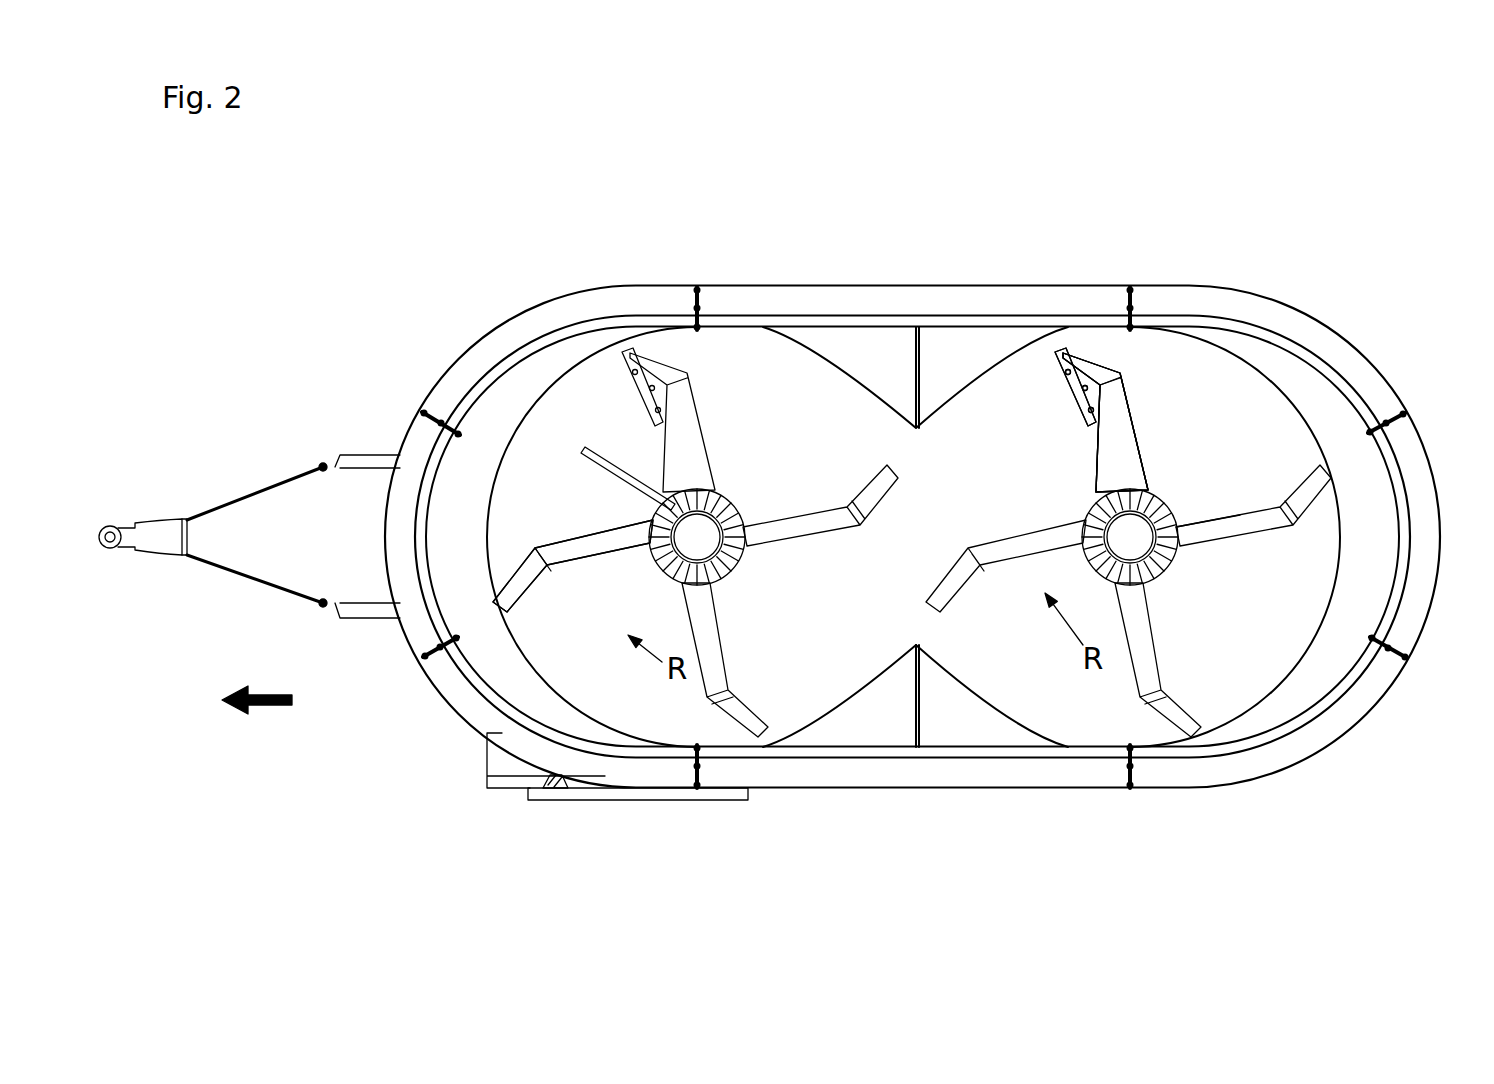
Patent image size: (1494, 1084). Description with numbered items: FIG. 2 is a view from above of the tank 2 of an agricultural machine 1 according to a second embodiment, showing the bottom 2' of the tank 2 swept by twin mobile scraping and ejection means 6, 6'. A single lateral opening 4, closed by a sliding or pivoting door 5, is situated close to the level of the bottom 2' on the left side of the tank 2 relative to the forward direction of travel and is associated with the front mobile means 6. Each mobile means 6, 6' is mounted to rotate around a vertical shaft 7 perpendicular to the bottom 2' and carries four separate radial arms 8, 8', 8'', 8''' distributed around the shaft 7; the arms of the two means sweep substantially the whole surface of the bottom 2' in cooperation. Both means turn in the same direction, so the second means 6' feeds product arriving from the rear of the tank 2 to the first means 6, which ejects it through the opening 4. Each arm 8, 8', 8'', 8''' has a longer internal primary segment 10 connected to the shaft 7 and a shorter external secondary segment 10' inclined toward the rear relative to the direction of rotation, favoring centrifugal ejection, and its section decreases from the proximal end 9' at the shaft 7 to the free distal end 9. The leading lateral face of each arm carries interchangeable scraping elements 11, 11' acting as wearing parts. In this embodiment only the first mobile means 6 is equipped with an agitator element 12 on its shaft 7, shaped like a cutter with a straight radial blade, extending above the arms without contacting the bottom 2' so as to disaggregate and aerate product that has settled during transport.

The agricultural machine 1 is at (697, 862).
The tank 2 is at (912, 565).
The bottom of tank 2' is at (912, 593).
The sealable opening 4 is at (637, 836).
The door 5 is at (598, 795).
The first mobile means 6 is at (682, 467).
The second mobile means 6' is at (1268, 513).
The vertical shaft 7 is at (1163, 573).
The radial arm 8 is at (1058, 661).
The radial arm 8' is at (798, 630).
The radial arm 8'' is at (854, 405).
The radial arm 8''' is at (1047, 355).
The free distal end 9 is at (1092, 275).
The proximal end 9' is at (1326, 464).
The primary segment 10 is at (904, 544).
The secondary segment 10' is at (825, 546).
The scraping element 11 is at (1097, 434).
The scraping element 11' is at (1054, 393).
The agitator element 12 is at (594, 458).